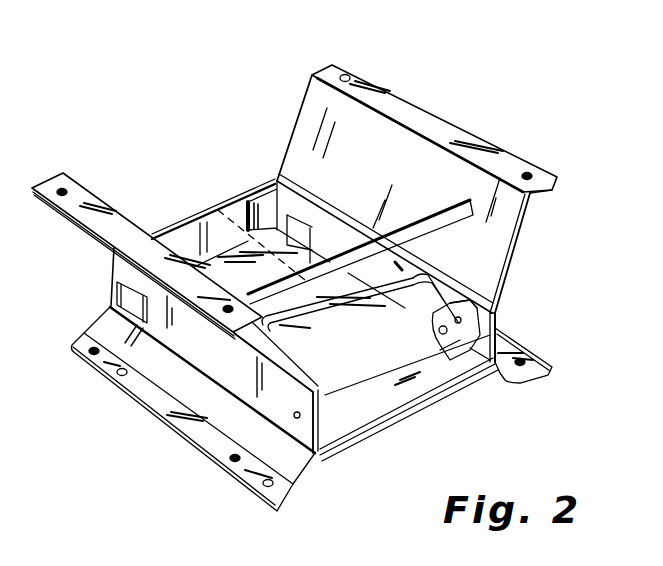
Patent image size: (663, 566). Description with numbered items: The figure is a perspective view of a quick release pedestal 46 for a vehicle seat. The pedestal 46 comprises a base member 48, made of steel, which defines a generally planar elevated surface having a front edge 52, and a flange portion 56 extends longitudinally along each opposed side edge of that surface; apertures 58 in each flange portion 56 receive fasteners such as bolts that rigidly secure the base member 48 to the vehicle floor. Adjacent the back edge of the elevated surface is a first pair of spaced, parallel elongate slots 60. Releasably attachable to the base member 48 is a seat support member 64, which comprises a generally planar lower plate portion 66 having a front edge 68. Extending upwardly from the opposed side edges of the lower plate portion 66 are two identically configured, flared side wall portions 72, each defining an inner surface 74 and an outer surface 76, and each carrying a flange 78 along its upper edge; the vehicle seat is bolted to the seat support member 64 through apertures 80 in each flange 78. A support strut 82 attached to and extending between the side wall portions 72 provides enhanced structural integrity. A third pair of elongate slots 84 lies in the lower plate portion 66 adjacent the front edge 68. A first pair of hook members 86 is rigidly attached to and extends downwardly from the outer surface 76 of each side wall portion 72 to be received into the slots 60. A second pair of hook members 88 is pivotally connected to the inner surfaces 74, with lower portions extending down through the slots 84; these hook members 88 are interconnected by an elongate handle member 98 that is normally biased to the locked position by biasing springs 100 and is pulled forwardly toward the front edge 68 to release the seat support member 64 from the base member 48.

The quick release pedestal 46 is at (403, 218).
The base member 48 is at (416, 342).
The front edge 52 is at (392, 430).
The flange portion 56 is at (280, 500).
The apertures 58 is at (90, 356).
The first pair of elongate slots 60 is at (113, 303).
The seat support member 64 is at (166, 271).
The lower plate portion 66 is at (437, 375).
The front edge 68 is at (438, 387).
The side wall portions 72 is at (318, 420).
The inner surface 74 is at (293, 205).
The outer surface 76 is at (180, 337).
The flange 78 is at (450, 127).
The apertures 80 is at (350, 74).
The support strut 82 is at (442, 229).
The third pair of elongate slots 84 is at (428, 334).
The first pair of hook members 86 is at (214, 212).
The second pair of hook members 88 is at (495, 310).
The handle member 98 is at (360, 323).
The biasing springs 100 is at (418, 276).